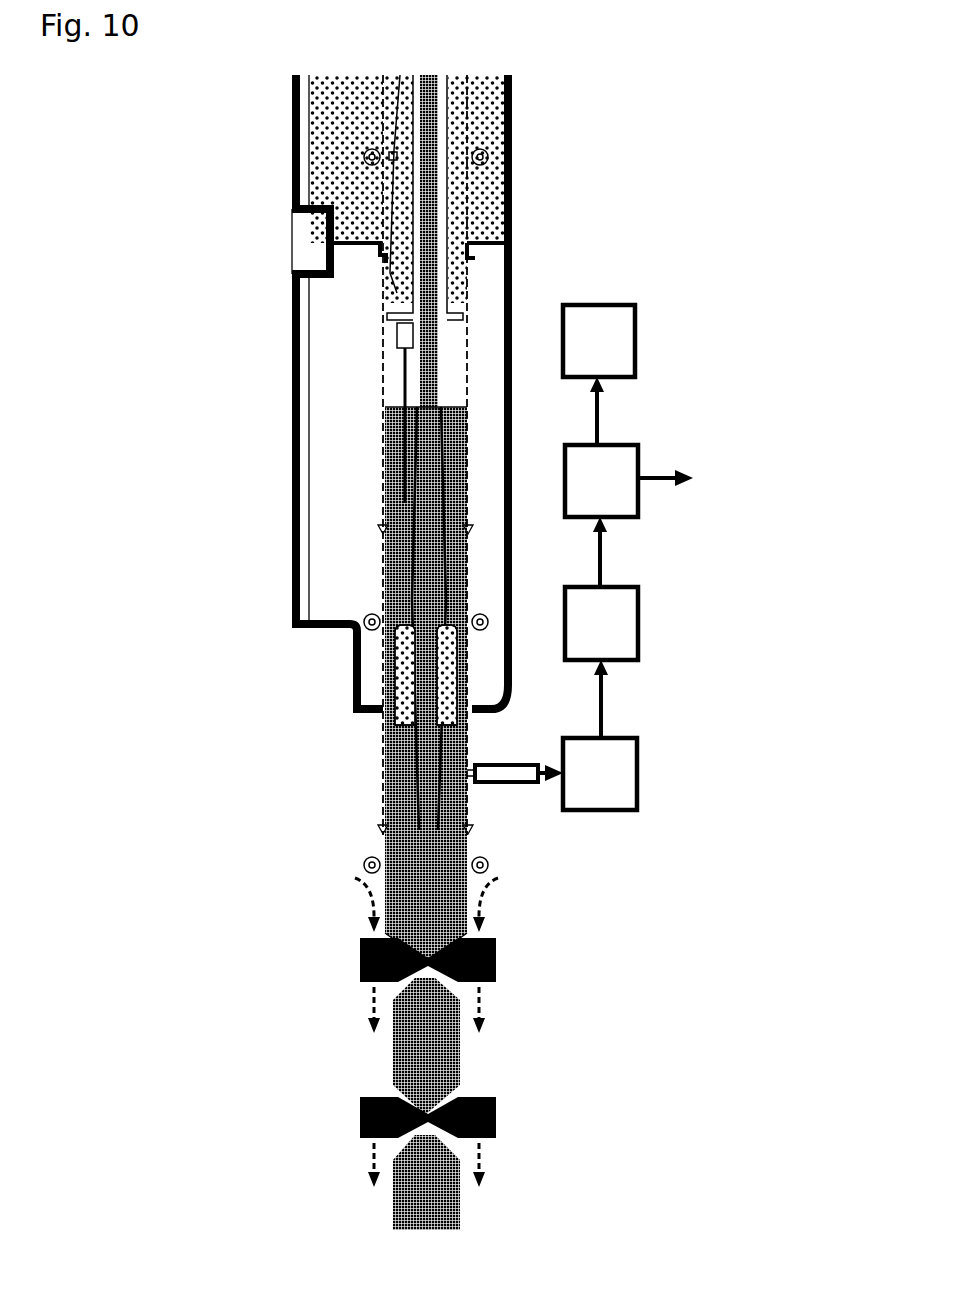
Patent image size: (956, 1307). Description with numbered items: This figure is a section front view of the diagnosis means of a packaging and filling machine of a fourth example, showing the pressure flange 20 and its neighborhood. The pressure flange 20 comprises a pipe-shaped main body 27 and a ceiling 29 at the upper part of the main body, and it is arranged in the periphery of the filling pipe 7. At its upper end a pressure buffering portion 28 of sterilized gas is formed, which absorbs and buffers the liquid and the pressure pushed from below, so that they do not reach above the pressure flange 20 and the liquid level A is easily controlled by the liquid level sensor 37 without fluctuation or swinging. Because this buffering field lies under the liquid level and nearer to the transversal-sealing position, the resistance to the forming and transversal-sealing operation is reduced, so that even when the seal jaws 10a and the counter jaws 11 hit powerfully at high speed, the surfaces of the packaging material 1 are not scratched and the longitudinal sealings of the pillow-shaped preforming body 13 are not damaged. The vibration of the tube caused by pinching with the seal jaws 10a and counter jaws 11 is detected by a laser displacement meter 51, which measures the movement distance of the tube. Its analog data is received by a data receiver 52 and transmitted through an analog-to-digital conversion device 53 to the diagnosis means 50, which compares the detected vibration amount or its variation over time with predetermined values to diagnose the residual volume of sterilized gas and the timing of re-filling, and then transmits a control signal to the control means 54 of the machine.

The packaging material 1 is at (383, 888).
The filling pipe 7 is at (420, 127).
The seal jaws 10a is at (493, 953).
The counter jaws 11 is at (362, 948).
The pillow-shaped preforming body 13 is at (392, 1057).
The pressure flange 20 is at (387, 696).
The pipe-shaped main body 27 is at (383, 752).
The pressure buffering portion 28 is at (407, 658).
The ceiling 29 is at (383, 607).
The liquid level sensor 37 is at (403, 368).
The liquid level A is at (384, 407).
The diagnosis means 50 is at (629, 447).
The laser displacement meter 51 is at (505, 783).
The data receiver 52 is at (600, 735).
The analog-to-digital conversion device 53 is at (601, 588).
The control means 54 is at (599, 341).